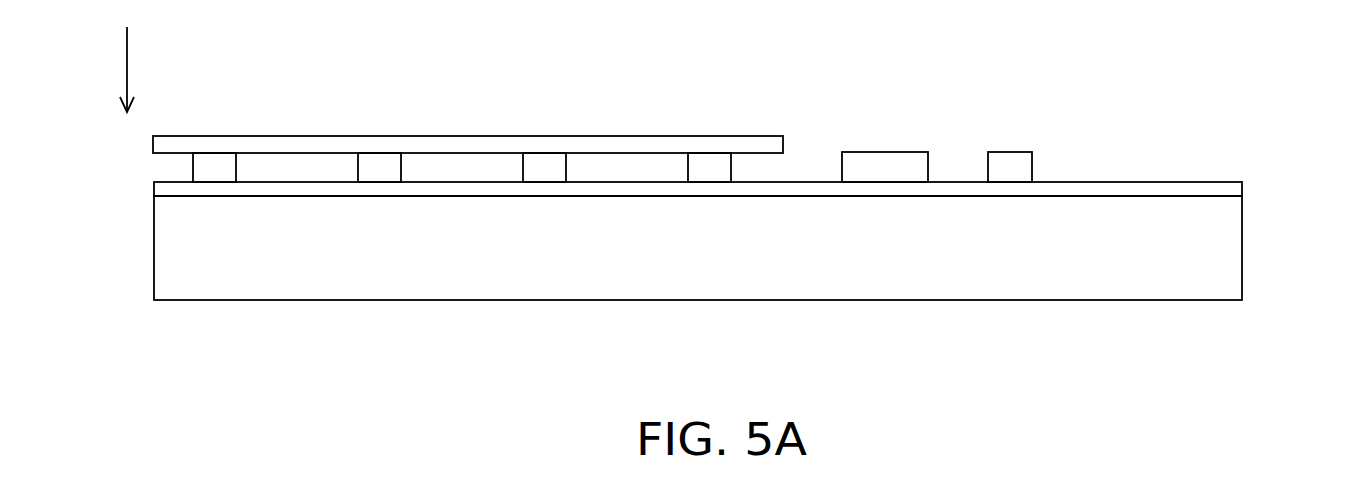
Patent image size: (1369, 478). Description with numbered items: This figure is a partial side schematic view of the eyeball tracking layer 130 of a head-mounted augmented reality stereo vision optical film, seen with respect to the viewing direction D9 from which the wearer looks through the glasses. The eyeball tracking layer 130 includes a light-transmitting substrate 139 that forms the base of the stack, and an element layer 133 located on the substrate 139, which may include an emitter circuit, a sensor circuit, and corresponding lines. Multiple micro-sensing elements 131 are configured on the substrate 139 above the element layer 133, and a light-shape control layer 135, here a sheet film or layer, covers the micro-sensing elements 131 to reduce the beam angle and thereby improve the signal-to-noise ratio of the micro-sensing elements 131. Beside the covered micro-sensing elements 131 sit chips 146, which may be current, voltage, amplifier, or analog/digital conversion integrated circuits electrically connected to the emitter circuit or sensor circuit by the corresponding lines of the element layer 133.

The eyeball tracking layer 130 is at (1363, 329).
The micro-sensing element 131 is at (216, 170).
The element layer 133 is at (1228, 189).
The light-shape control layer 135 is at (622, 135).
The substrate 139 is at (1220, 249).
The chip 146 is at (885, 152).
The viewing direction D9 is at (126, 78).